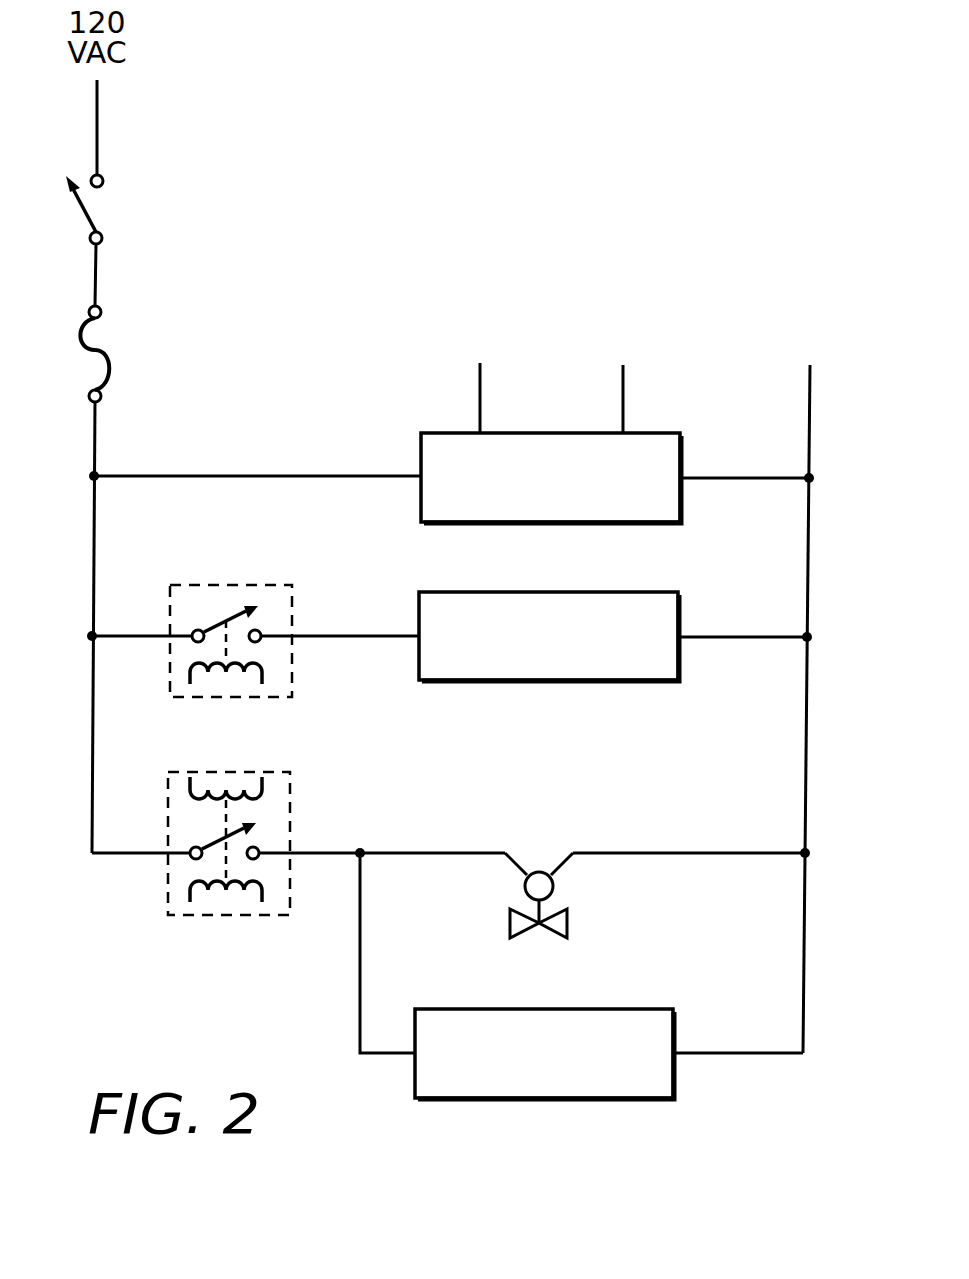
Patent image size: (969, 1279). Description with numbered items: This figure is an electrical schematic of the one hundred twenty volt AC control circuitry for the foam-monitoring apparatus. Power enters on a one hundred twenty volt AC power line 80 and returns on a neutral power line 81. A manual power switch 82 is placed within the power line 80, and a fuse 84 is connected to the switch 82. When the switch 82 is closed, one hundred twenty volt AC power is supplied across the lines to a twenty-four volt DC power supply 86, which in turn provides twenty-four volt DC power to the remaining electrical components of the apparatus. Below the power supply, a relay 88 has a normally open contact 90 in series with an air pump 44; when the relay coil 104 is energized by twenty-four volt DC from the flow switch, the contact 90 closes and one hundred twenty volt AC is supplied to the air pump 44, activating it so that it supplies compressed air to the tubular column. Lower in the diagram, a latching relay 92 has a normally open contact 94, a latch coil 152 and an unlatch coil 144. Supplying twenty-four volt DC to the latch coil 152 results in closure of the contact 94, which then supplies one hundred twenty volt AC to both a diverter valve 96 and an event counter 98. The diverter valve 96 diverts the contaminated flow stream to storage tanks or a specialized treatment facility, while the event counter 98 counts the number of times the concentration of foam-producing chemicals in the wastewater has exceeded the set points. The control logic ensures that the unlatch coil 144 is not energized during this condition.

The 120 VAC power line 80 is at (98, 115).
The manual power switch 82 is at (82, 205).
The fuse 84 is at (89, 337).
The 24 VDC power supply 86 is at (437, 445).
The neutral power line 81 is at (810, 400).
The air pump 44 is at (435, 605).
The relay 88 is at (160, 610).
The normally open contact 90 is at (205, 627).
The relay coil 104 is at (262, 664).
The latching relay 92 is at (158, 798).
The unlatch coil 144 is at (262, 798).
The normally open contact 94 is at (212, 855).
The latch coil 152 is at (190, 883).
The diverter valve 96 is at (540, 883).
The event counter 98 is at (430, 1020).